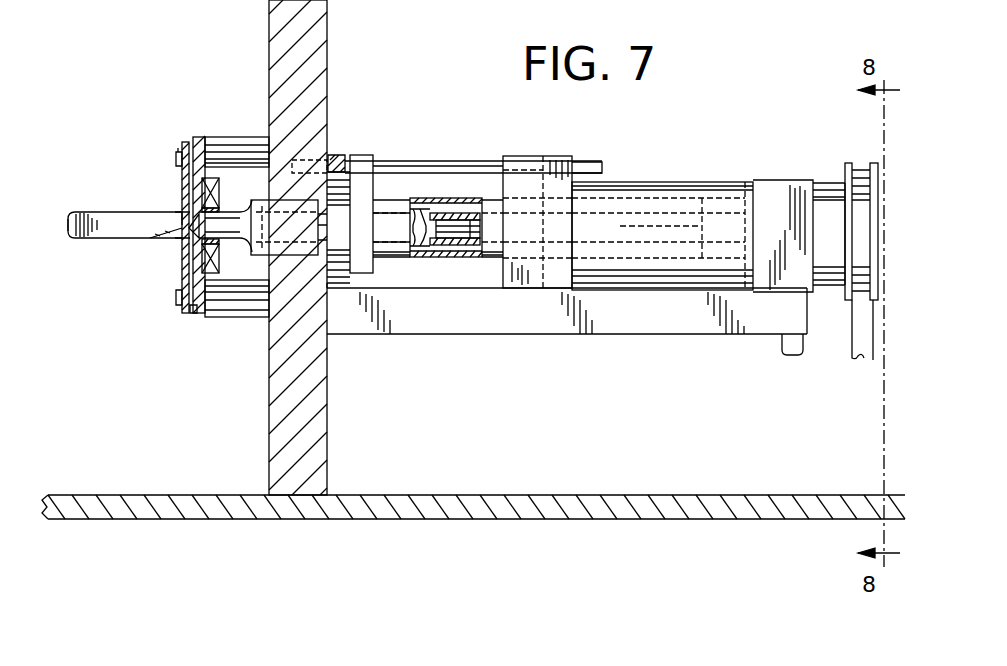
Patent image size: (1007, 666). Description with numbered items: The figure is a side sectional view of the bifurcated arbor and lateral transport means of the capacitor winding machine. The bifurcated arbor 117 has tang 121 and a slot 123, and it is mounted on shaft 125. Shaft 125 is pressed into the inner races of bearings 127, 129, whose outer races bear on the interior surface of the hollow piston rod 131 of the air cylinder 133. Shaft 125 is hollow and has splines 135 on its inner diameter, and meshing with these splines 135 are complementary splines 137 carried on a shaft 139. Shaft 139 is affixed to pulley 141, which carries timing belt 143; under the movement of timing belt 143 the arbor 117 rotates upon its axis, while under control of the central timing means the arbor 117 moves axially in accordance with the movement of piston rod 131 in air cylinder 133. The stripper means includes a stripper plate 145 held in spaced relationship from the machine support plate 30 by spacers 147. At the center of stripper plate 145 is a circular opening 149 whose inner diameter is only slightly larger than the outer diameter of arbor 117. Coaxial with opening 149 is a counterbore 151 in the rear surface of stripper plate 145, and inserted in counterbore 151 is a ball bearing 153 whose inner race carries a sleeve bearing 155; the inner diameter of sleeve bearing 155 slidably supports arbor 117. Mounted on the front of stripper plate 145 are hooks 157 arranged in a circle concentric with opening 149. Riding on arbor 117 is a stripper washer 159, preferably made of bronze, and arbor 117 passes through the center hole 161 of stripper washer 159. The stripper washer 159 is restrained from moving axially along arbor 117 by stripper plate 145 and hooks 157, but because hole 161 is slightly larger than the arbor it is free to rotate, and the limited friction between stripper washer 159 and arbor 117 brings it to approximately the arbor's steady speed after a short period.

The machine support plate 30 is at (274, 22).
The bifurcated arbor 117 is at (72, 240).
The tang 121 is at (104, 214).
The slot 123 is at (172, 233).
The shaft 125 is at (318, 283).
The bearing 127 is at (358, 205).
The bearing 129 is at (542, 156).
The hollow piston rod 131 is at (417, 198).
The air cylinder 133 is at (648, 182).
The splines 135 is at (462, 213).
The complementary splines 137 is at (470, 246).
The shaft 139 is at (645, 260).
The pulley 141 is at (845, 170).
The timing belt 143 is at (852, 346).
The stripper plate 145 is at (198, 136).
The spacers 147 is at (246, 140).
The circular opening 149 is at (185, 214).
The counterbore 151 is at (219, 186).
The ball bearing 153 is at (198, 316).
The sleeve bearing 155 is at (217, 256).
The hooks 157 is at (177, 158).
The stripper washer 159 is at (186, 268).
The center hole 161 is at (177, 240).